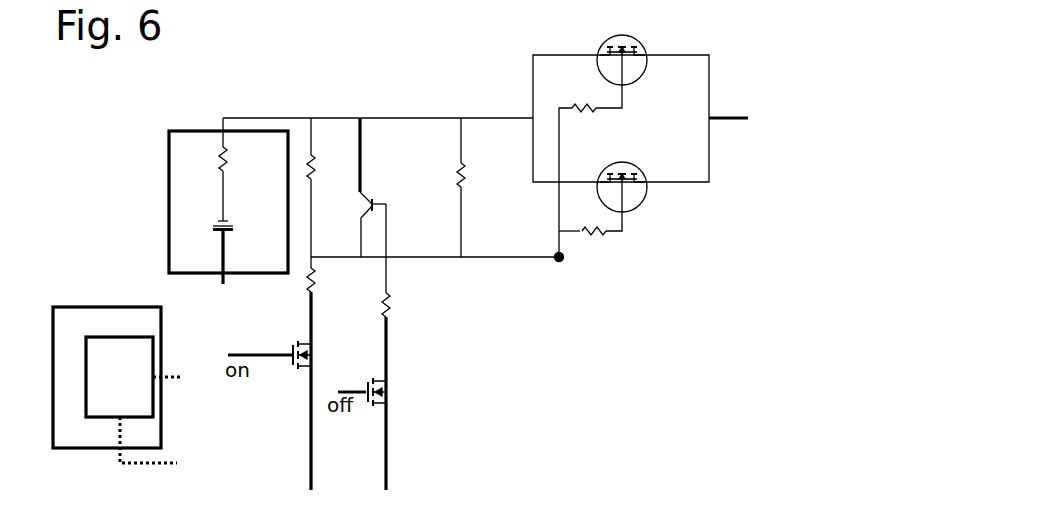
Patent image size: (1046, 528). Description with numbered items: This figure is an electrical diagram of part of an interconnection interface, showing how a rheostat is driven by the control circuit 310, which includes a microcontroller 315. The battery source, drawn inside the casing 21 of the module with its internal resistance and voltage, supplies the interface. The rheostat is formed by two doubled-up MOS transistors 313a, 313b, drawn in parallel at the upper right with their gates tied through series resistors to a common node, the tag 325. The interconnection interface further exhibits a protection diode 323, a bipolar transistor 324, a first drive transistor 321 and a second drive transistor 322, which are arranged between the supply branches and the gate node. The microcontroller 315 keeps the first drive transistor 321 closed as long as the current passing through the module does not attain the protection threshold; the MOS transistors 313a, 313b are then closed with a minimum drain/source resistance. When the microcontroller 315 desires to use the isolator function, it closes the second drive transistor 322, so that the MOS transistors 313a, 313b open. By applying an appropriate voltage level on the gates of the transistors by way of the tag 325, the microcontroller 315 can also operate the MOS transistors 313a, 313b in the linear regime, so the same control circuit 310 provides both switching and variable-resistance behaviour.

The casing 21 is at (168, 203).
The control circuit 310 is at (106, 307).
The microcontroller 315 is at (143, 392).
The first drive transistor 321 is at (269, 346).
The second drive transistor 322 is at (358, 383).
The protection diode 323 is at (331, 304).
The bipolar transistor 324 is at (389, 304).
The tag 325 is at (560, 262).
The MOS transistor 313a is at (628, 146).
The MOS transistor 313b is at (628, 198).